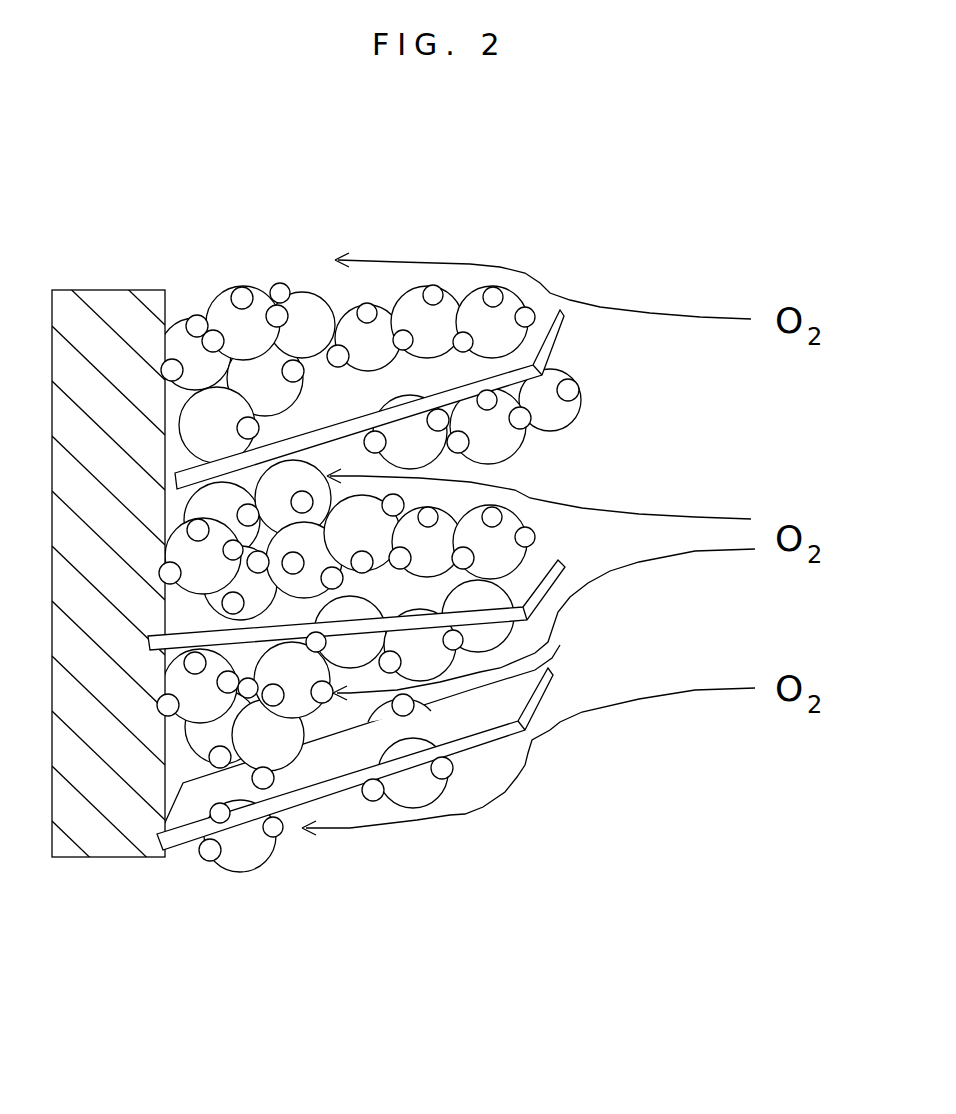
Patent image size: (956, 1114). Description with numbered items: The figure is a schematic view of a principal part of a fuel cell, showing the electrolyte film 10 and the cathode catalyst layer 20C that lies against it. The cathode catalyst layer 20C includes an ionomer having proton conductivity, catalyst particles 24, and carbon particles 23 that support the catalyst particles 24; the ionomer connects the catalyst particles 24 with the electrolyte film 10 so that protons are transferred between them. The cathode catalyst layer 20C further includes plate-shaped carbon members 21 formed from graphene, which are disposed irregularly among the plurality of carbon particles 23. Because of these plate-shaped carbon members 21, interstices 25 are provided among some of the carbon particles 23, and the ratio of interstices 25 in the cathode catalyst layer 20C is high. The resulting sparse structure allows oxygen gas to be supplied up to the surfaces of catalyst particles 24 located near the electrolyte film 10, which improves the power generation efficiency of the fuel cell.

The electrolyte film 10 is at (165, 212).
The cathode catalyst layer 20C is at (580, 212).
The plate-shaped carbon member 21 is at (180, 833).
The carbon particle 23 is at (247, 850).
The catalyst particle 24 is at (283, 832).
The interstice 25 is at (477, 471).